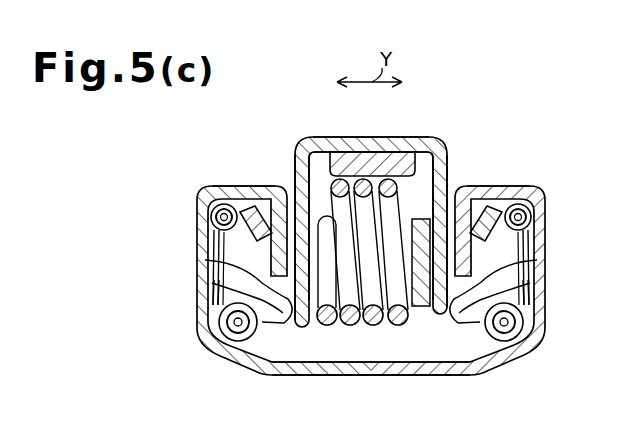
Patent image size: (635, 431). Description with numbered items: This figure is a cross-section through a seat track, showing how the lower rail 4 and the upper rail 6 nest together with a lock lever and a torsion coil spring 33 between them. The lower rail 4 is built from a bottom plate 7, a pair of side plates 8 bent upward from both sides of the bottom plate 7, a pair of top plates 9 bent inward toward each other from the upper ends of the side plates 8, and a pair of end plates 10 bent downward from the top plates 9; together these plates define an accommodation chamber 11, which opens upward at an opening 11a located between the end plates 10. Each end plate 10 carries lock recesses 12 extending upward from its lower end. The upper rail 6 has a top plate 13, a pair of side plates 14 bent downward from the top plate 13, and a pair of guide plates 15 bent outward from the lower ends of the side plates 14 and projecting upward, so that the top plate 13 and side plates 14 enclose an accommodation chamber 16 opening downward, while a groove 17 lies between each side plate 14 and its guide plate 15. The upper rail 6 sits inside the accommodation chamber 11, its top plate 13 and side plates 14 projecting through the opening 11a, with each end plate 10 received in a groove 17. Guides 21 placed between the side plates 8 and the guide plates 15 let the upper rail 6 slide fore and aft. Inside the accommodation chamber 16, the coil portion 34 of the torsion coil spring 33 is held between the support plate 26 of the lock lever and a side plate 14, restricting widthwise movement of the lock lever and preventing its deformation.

The lower rail 4 is at (412, 380).
The upper rail 6 is at (427, 129).
The bottom plate 7 is at (364, 374).
The side plate 8 is at (205, 270).
The top plate 9 is at (228, 188).
The end plate 10 is at (252, 208).
The accommodation chamber 11 is at (328, 363).
The opening 11a is at (287, 203).
The lock recess 12 is at (218, 292).
The top plate 13 is at (396, 143).
The side plate 14 is at (298, 167).
The guide plate 15 is at (212, 243).
The accommodation chamber 16 is at (318, 168).
The groove 17 is at (285, 317).
The guide 21 is at (250, 372).
The support plate 26 is at (423, 219).
The torsion coil spring 33 is at (363, 170).
The coil portion 34 is at (353, 327).